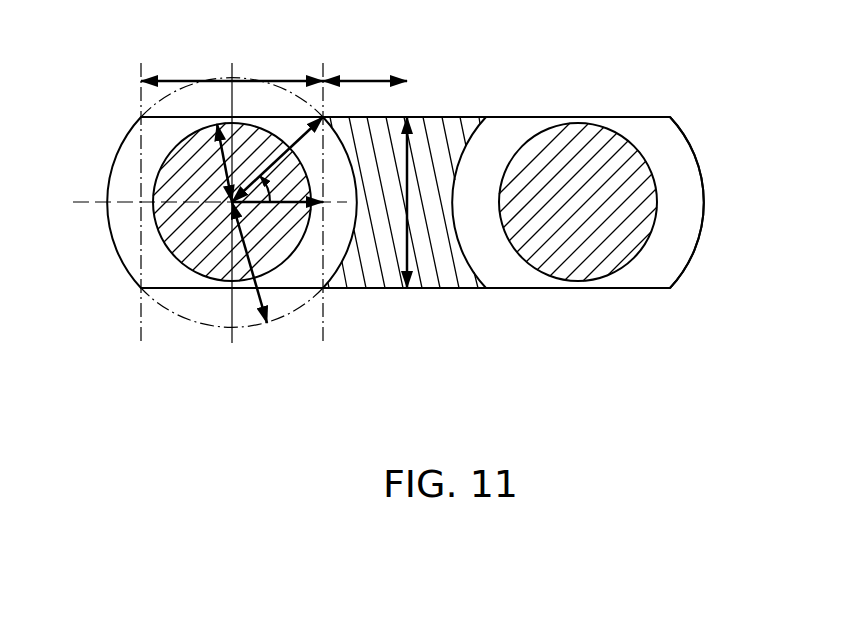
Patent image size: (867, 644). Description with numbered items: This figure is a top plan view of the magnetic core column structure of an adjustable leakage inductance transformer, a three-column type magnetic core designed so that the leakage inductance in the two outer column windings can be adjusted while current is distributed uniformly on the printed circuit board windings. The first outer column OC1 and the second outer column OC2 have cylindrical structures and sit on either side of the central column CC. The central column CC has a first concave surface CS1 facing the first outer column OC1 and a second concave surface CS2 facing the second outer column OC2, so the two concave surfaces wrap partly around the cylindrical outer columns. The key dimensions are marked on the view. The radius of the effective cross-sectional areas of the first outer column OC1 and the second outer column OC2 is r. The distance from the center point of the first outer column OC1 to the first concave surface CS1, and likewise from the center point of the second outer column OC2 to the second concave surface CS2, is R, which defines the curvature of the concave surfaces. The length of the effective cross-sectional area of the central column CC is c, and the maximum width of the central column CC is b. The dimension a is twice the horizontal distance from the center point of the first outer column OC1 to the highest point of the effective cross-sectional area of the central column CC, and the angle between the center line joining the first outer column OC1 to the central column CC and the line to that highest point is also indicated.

The first outer column OC1 is at (148, 302).
The second outer column OC2 is at (645, 243).
The first concave surface CS1 is at (328, 288).
The central column CC is at (392, 288).
The second concave surface CS2 is at (475, 288).
The twice the horizontal distance from the first outer column center to the highest a is at (232, 64).
The maximum width of the central column b is at (365, 64).
The length of the effective cross-sectional area of the central column c is at (394, 202).
The radius of the effective cross-sectional areas of the outer columns r is at (219, 163).
The distance from an outer column center point to its facing concave surface R is at (253, 262).